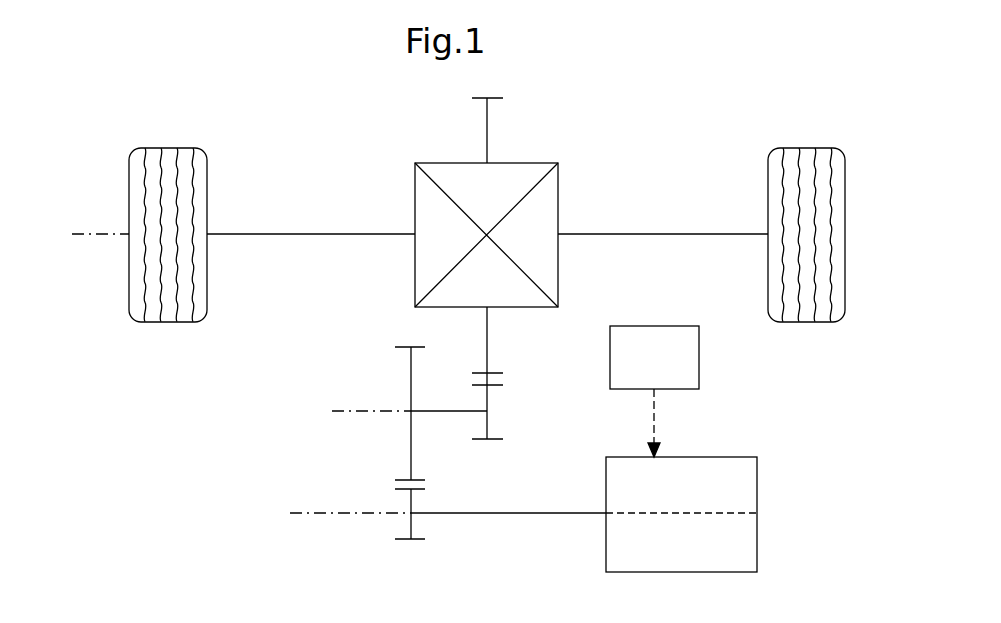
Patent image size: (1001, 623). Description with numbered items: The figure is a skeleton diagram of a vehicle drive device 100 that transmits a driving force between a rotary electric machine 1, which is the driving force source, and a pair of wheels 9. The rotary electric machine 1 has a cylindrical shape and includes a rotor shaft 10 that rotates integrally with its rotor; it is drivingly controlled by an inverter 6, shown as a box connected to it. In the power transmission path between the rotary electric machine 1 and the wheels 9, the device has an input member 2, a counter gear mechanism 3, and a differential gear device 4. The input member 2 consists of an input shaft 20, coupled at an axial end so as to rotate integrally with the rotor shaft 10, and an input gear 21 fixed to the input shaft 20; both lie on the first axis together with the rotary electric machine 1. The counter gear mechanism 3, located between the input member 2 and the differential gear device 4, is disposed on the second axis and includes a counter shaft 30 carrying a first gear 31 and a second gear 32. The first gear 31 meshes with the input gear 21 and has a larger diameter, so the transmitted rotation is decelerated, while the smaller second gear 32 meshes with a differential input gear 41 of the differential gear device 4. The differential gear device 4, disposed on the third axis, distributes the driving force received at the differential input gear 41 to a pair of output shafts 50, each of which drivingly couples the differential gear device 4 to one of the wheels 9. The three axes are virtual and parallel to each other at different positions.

The vehicle drive device 100 is at (706, 88).
The rotary electric machine 1 is at (727, 457).
The rotor shaft 10 is at (725, 510).
The input member 2 is at (557, 526).
The input shaft 20 is at (505, 518).
The input gear 21 is at (420, 491).
The counter gear mechanism 3 is at (379, 366).
The counter shaft 30 is at (445, 414).
The first gear 31 is at (400, 478).
The second gear 32 is at (495, 388).
The differential gear device 4 is at (560, 124).
The differential input gear 41 is at (493, 372).
The output shaft 50 is at (310, 233).
The inverter 6 is at (652, 326).
The wheel 9 is at (168, 148).